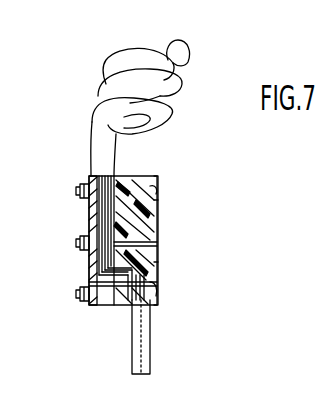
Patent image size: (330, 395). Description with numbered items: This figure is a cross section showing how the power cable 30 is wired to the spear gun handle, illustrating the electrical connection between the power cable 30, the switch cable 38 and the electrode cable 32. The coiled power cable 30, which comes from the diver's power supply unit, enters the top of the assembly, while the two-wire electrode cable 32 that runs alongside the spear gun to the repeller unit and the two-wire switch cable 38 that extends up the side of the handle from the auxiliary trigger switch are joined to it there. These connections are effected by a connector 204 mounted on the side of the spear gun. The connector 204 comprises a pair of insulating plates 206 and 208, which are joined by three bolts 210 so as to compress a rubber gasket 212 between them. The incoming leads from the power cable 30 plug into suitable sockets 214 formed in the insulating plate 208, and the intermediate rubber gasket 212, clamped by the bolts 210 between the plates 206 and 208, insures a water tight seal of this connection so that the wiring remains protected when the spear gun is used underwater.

The power cable 30 is at (100, 90).
The two-wire cable 32 is at (152, 210).
The two wire cable 38 is at (148, 334).
The connector 204 is at (68, 182).
The insulating plate 206 is at (93, 262).
The insulating plate 208 is at (158, 262).
The bolts 210 is at (76, 200).
The rubber gasket 212 is at (120, 178).
The sockets 214 is at (154, 190).